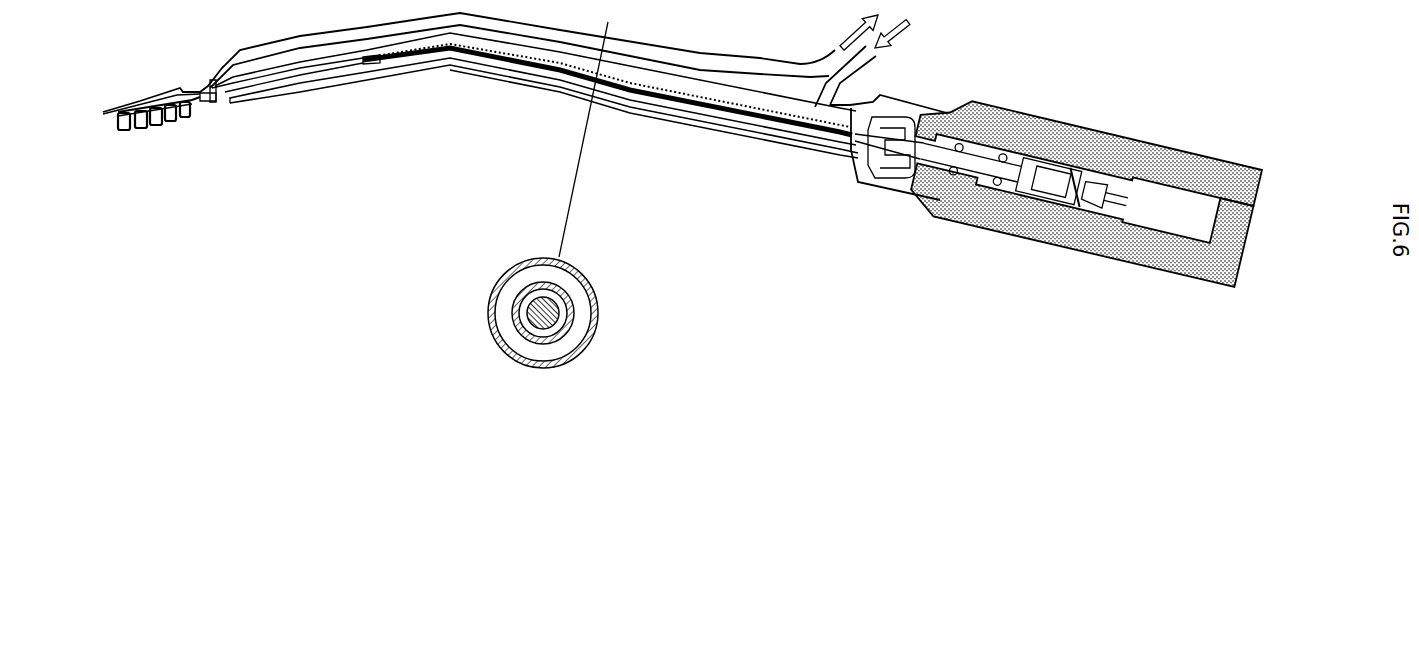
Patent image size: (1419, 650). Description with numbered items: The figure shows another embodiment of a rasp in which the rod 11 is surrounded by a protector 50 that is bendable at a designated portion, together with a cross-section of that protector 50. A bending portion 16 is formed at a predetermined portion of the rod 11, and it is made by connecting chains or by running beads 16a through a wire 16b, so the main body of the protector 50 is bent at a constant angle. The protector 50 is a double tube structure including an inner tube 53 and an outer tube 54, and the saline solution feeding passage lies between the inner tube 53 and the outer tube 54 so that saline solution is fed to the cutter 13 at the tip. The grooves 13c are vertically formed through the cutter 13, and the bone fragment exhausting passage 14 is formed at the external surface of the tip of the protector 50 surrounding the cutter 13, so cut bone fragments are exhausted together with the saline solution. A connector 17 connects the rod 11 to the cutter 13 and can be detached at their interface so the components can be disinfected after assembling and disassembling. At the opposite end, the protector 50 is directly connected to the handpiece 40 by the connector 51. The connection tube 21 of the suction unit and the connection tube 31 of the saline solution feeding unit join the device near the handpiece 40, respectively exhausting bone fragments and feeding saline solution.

The rod 11 is at (812, 148).
The cutter 13 is at (182, 128).
The grooves 13c is at (128, 133).
The bone fragment exhausting passage 14 is at (188, 86).
The bending portion 16 is at (395, 62).
The beads 16a is at (380, 63).
The wire 16b is at (433, 60).
The connector 17 is at (207, 102).
The connection tube 21 is at (735, 58).
The connection tube 31 is at (862, 63).
The handpiece 40 is at (1076, 120).
The protector 50 is at (563, 405).
The connector 51 is at (920, 98).
The inner tube 53 is at (785, 115).
The outer tube 54 is at (683, 113).